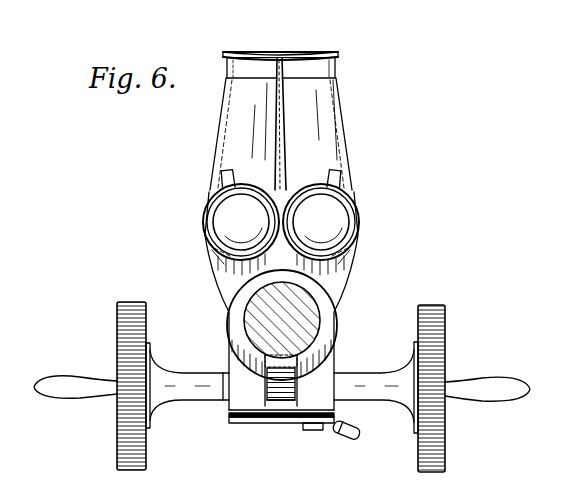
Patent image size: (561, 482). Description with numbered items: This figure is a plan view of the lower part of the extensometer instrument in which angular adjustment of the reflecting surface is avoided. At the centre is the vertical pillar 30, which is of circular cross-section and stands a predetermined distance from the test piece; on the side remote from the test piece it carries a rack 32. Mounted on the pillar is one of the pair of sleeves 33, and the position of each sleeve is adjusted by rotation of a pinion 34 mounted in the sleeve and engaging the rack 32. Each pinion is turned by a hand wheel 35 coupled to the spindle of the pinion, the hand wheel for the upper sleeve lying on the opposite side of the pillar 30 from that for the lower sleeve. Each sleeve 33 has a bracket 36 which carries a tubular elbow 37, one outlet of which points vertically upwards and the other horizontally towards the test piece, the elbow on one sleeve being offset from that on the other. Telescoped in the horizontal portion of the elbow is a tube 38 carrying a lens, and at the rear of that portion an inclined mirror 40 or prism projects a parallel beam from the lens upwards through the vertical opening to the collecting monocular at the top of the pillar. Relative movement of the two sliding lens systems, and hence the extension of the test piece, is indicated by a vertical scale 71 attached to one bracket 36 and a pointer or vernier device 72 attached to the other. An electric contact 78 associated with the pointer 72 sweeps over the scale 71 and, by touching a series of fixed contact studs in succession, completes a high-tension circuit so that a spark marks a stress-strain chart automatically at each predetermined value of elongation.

The vertical pillar 30 is at (297, 322).
The rack 32 is at (266, 376).
The sleeve 33 is at (233, 308).
The pinion 34 is at (290, 388).
The hand wheel 35 is at (124, 325).
The bracket 36 is at (209, 206).
The tubular elbow 37 is at (236, 136).
The tube 38 is at (246, 70).
The inclined mirror 40 is at (214, 250).
The vertical scale 71 is at (254, 414).
The pointer or vernier device 72 is at (281, 422).
The electric contact 78 is at (318, 428).